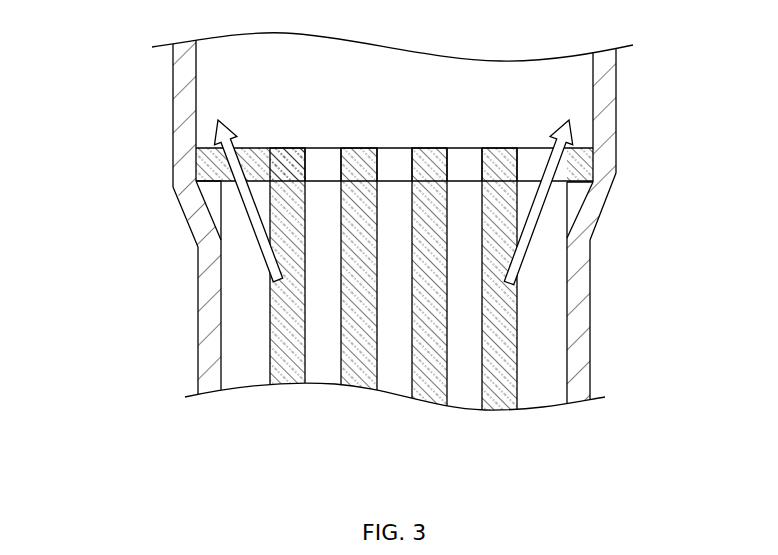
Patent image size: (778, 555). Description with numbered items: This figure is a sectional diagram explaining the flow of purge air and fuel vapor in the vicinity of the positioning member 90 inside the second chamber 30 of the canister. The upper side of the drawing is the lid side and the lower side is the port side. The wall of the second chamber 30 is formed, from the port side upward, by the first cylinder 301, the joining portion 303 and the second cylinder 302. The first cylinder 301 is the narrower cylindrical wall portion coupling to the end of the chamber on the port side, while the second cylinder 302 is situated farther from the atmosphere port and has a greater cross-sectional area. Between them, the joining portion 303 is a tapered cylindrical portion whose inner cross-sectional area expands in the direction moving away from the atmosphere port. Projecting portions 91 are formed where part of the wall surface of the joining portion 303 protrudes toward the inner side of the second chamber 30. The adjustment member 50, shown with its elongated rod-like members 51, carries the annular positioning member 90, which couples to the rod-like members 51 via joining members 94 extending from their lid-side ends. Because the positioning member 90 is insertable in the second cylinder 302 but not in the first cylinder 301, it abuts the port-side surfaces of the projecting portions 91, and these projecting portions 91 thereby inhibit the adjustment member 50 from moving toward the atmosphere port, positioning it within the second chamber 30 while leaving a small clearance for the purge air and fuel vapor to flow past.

The second chamber 30 is at (183, 80).
The second cylinder 302 is at (183, 117).
The joining portion 303 is at (193, 203).
The first cylinder 301 is at (200, 313).
The projecting portions 91 is at (210, 190).
The joining members 94 is at (563, 163).
The adjustment member 50 is at (564, 318).
The rod-like members 51 is at (500, 353).
The positioning member 90 is at (581, 152).